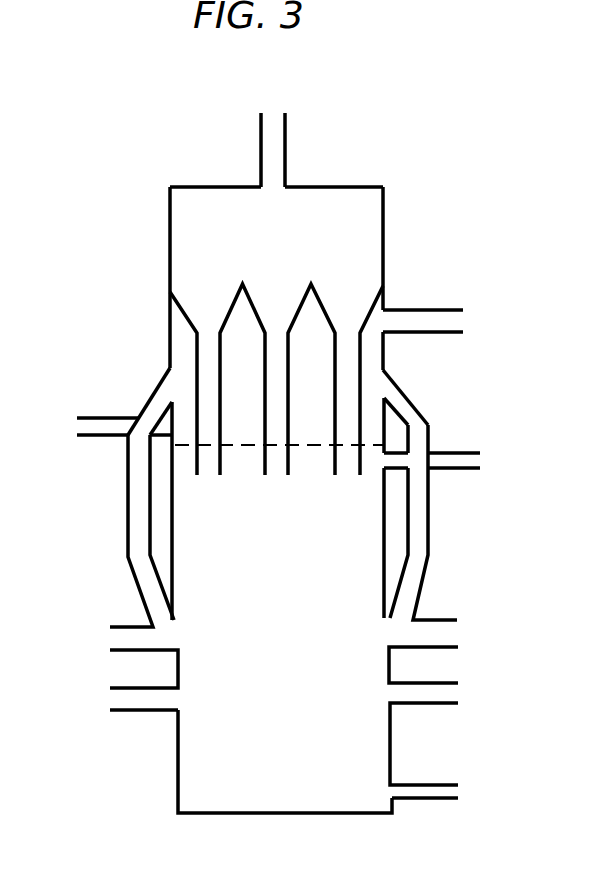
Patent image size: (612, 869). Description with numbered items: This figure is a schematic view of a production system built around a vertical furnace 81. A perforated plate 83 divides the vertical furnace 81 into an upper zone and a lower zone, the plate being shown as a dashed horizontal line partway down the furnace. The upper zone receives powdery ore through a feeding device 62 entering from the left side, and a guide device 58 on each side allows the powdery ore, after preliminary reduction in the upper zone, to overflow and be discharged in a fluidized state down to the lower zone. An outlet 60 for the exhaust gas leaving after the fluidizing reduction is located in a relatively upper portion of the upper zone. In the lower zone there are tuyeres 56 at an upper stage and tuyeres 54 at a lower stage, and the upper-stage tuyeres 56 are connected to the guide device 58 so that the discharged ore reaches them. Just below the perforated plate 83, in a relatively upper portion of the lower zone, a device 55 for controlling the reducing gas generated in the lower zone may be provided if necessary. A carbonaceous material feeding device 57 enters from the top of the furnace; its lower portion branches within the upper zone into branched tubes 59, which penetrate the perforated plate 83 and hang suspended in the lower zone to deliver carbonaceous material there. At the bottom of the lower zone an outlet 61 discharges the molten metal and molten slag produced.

The vertical furnace 81 is at (383, 228).
The carbonaceous material feeding device 57 is at (285, 138).
The outlet for the exhaust gas 60 is at (438, 308).
The branched tubes 59 is at (273, 365).
The guide device 58 is at (155, 405).
The feeding device for a powdery ore 62 is at (110, 427).
The device for controlling a reducing gas 55 is at (463, 462).
The perforated plate 83 is at (242, 445).
The tuyeres in the upper stage 56 is at (120, 633).
The tuyeres in the lower stage 54 is at (143, 697).
The outlet discharging a molten metal and a molten slag 61 is at (430, 793).